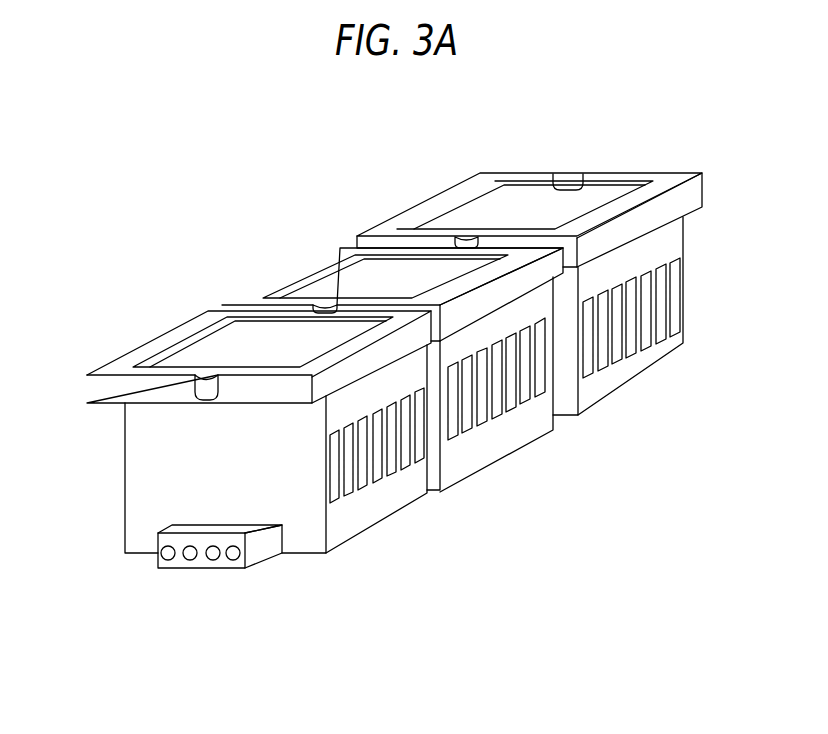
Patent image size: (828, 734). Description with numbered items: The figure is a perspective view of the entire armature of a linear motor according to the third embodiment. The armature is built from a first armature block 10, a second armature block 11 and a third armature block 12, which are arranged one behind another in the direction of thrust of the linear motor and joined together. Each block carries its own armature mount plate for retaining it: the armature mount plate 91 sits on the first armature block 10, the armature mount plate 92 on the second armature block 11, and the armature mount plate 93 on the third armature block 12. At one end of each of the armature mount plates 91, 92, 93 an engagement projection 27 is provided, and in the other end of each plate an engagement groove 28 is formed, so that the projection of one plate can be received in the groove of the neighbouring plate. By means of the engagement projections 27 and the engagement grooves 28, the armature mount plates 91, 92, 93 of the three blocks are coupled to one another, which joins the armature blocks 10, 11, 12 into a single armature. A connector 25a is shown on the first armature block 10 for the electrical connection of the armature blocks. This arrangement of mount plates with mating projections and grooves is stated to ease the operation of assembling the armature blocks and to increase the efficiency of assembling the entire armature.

The first armature block 10 is at (385, 508).
The second armature block 11 is at (502, 448).
The third armature block 12 is at (633, 370).
The armature mount plate 91 is at (157, 347).
The armature mount plate 92 is at (293, 278).
The armature mount plate 93 is at (427, 202).
The engagement projection 27 is at (207, 400).
The engagement groove 28 is at (568, 175).
The connector 25a is at (263, 553).